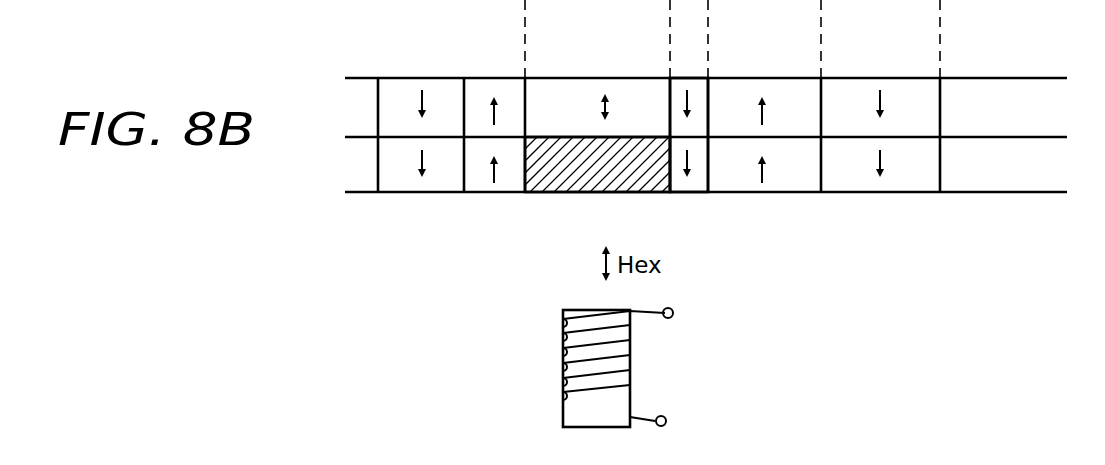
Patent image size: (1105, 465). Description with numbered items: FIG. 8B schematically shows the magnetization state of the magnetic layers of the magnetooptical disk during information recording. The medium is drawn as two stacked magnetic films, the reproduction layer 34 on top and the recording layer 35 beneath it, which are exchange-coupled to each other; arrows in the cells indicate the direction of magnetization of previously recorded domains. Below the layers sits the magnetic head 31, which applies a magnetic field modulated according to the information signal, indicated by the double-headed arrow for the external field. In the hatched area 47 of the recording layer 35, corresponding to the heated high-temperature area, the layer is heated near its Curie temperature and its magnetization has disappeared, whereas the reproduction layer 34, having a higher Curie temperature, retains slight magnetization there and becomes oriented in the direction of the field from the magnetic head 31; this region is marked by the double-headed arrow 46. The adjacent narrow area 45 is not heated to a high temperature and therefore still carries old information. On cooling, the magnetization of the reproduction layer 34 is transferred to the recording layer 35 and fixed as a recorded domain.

The magnetic head 31 is at (578, 414).
The reproduction layer 34 is at (1022, 92).
The recording layer 35 is at (1040, 172).
The area not heated to a high temperature 45 is at (700, 94).
The recording region 46 is at (585, 92).
The area corresponding to the high-temperature area 47 is at (563, 186).